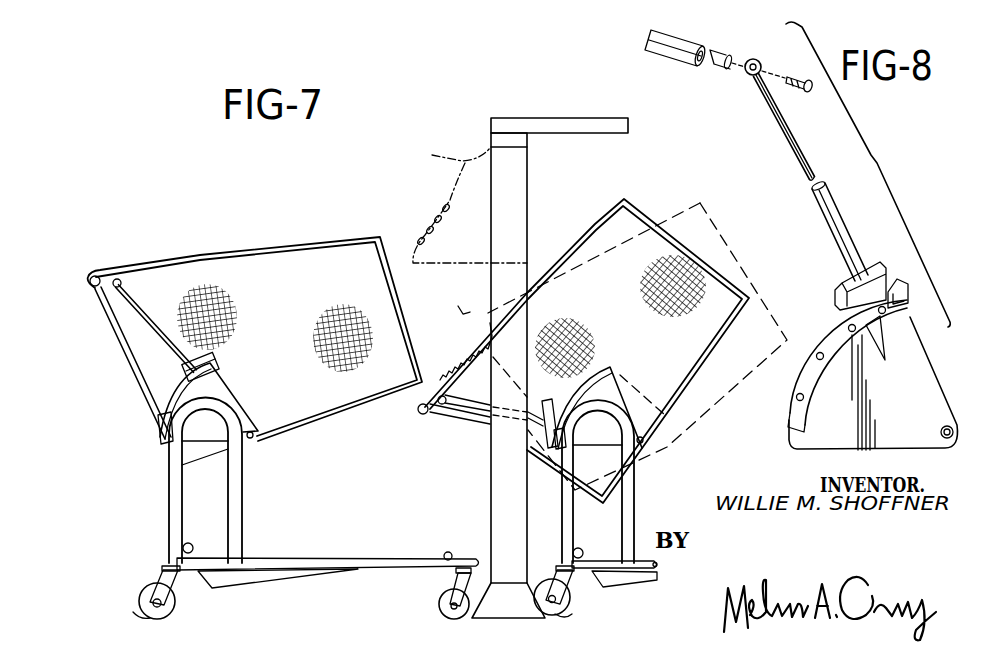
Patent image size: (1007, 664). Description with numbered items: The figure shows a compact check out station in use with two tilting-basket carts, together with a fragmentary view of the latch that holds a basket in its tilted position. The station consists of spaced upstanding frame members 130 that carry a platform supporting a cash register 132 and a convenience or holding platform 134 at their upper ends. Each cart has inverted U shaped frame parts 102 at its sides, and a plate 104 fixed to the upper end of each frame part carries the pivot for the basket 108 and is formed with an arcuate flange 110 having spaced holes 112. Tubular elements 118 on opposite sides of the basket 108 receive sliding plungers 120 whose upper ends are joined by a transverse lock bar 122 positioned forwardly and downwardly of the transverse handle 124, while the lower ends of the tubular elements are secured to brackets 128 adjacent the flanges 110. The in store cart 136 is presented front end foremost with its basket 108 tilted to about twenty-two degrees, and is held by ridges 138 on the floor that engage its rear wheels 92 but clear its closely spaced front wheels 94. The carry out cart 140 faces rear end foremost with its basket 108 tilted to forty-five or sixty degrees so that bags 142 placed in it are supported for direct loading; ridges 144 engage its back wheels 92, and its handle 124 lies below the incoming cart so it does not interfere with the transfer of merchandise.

In FIG. 7, the rear wheels 92 is at (158, 582).
In FIG. 7, the front wheels 94 is at (447, 604).
In FIG. 7, the inverted U shaped frame parts 102 is at (244, 500).
In FIG. 7, the plate 104 is at (221, 392).
In FIG. 8, the plate 104 is at (917, 364).
In FIG. 7, the basket 108 is at (288, 255).
In FIG. 8, the flange 110 is at (830, 338).
In FIG. 8, the holes 112 is at (796, 396).
In FIG. 7, the tubular elements 118 is at (160, 342).
In FIG. 8, the tubular elements 118 is at (832, 224).
In FIG. 7, the plungers 120 is at (217, 365).
In FIG. 8, the plungers 120 is at (787, 141).
In FIG. 8, the lock bar 122 is at (654, 52).
In FIG. 7, the handle 124 is at (97, 294).
In FIG. 7, the brackets 128 is at (160, 405).
In FIG. 8, the brackets 128 is at (837, 284).
In FIG. 7, the upstanding frame members 130 is at (492, 492).
In FIG. 7, the cash register 132 is at (462, 205).
In FIG. 7, the holding platform 134 is at (541, 126).
In FIG. 7, the in store cart 136 is at (287, 459).
In FIG. 7, the ridges 138 is at (135, 614).
In FIG. 7, the carry out cart 140 is at (665, 455).
In FIG. 7, the bags 142 is at (452, 353).
In FIG. 7, the ridges 144 is at (574, 612).